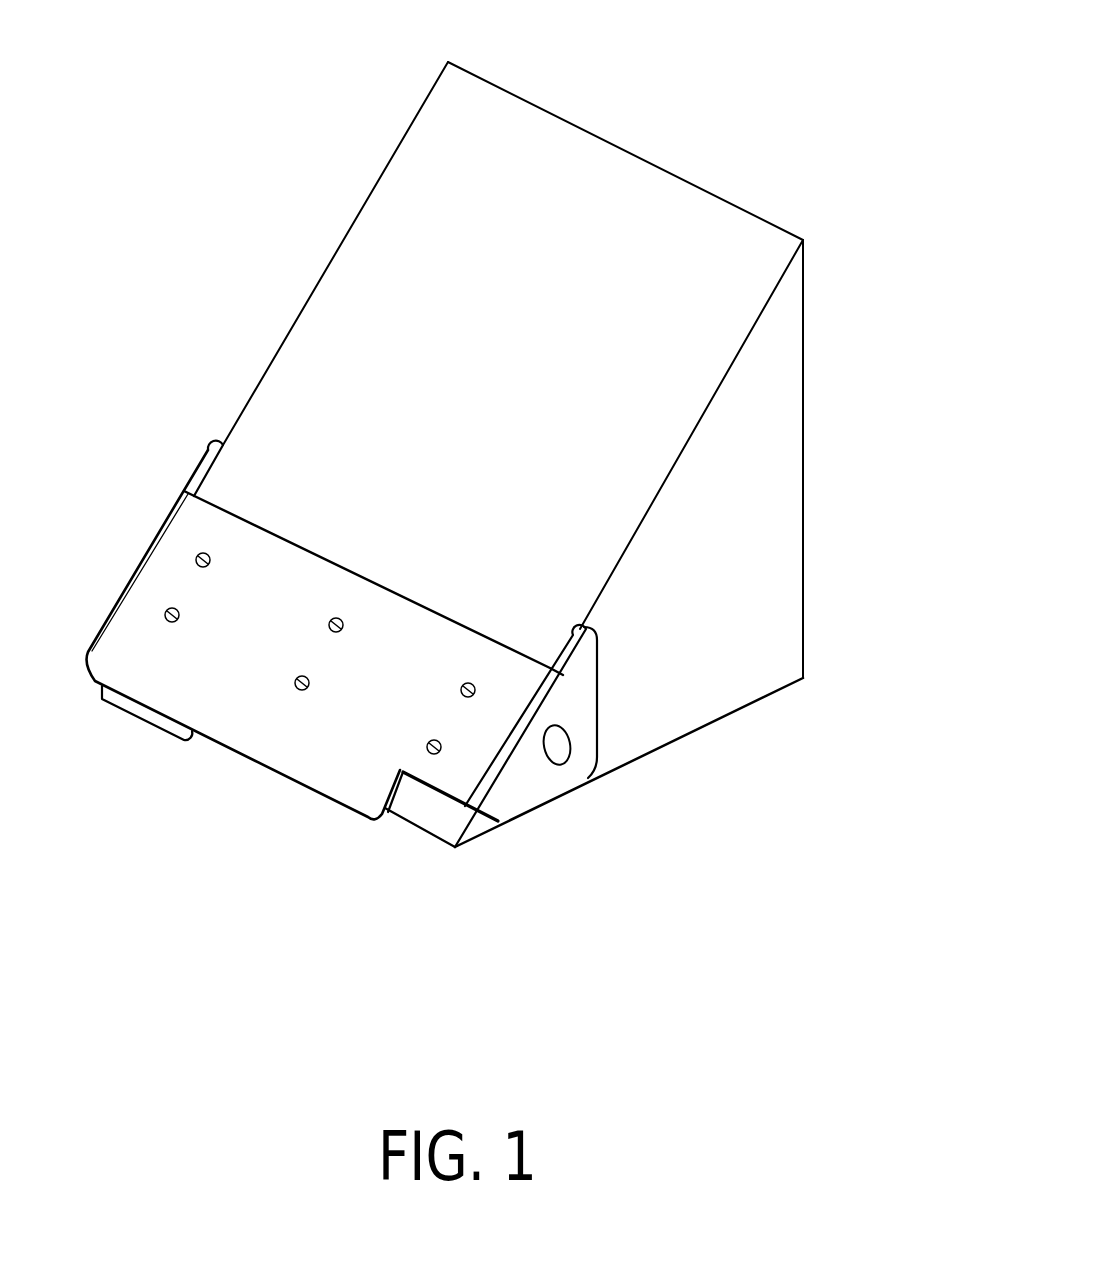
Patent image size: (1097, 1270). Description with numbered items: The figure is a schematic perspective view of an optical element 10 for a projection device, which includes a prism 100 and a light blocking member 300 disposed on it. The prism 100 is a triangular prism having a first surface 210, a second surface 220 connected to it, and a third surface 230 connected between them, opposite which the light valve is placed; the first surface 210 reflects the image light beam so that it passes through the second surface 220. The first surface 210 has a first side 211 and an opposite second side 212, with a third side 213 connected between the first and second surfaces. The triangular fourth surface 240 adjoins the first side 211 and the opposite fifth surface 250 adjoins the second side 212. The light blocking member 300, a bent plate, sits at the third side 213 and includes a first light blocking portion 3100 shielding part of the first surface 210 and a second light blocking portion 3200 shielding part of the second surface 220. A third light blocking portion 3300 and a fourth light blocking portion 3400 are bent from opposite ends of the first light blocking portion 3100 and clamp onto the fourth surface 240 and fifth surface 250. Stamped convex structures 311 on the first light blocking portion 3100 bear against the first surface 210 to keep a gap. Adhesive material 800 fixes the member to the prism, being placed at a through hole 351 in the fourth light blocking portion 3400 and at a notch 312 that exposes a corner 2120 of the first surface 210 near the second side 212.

The optical element 10 is at (244, 64).
The prism 100 is at (610, 190).
The first surface 210 is at (348, 365).
The first side 211 is at (358, 213).
The second side 212 is at (745, 352).
The third side 213 is at (405, 822).
The second surface 220 is at (747, 703).
The third surface 230 is at (803, 573).
The fourth surface 240 is at (248, 405).
The fifth surface 250 is at (753, 482).
The light blocking member 300 is at (225, 750).
The convex structures 311 is at (300, 690).
The notch 312 is at (433, 807).
The through hole 351 is at (570, 723).
The adhesive material 800 is at (558, 742).
The corner 2120 is at (453, 812).
The first light blocking portion 3100 is at (135, 657).
The second light blocking portion 3200 is at (132, 708).
The third light blocking portion 3300 is at (198, 475).
The fourth light blocking portion 3400 is at (572, 775).